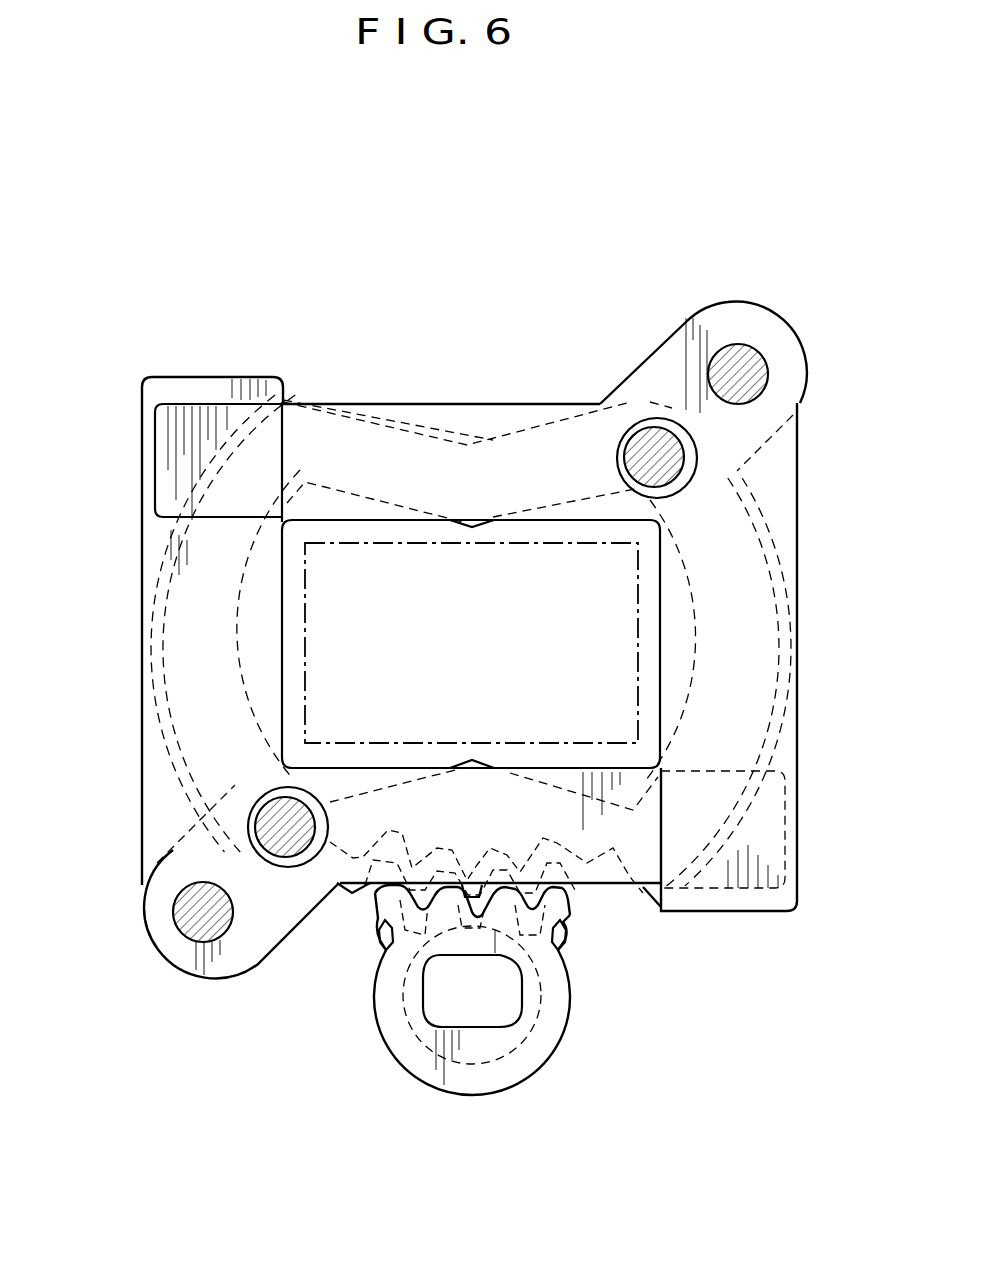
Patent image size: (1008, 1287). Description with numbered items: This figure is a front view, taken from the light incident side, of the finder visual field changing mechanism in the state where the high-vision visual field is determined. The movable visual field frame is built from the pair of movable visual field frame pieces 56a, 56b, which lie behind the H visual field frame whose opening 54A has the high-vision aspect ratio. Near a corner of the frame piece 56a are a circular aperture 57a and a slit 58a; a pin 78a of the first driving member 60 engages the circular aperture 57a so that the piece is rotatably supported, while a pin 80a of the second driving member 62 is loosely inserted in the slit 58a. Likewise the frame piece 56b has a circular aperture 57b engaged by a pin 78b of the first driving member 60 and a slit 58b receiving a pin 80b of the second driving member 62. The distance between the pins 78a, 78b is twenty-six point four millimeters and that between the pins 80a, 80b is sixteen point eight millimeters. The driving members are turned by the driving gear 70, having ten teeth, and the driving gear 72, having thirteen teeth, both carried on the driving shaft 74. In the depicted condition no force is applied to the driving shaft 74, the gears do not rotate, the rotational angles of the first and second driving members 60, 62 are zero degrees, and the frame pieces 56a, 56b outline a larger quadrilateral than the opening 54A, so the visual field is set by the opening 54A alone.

The opening 54A is at (305, 650).
The movable visual field frame piece 56a is at (792, 750).
The movable visual field frame piece 56b is at (152, 780).
The circular aperture 57a is at (757, 387).
The circular aperture 57b is at (182, 897).
The slit 58a is at (651, 418).
The slit 58b is at (330, 850).
The first driving member 60 is at (177, 848).
The second driving member 62 is at (187, 743).
The driving gear 70 is at (560, 942).
The driving gear 72 is at (567, 907).
The driving shaft 74 is at (475, 1015).
The pin 78a is at (745, 344).
The pin 78b is at (187, 920).
The pin 80a is at (668, 482).
The pin 80b is at (287, 853).